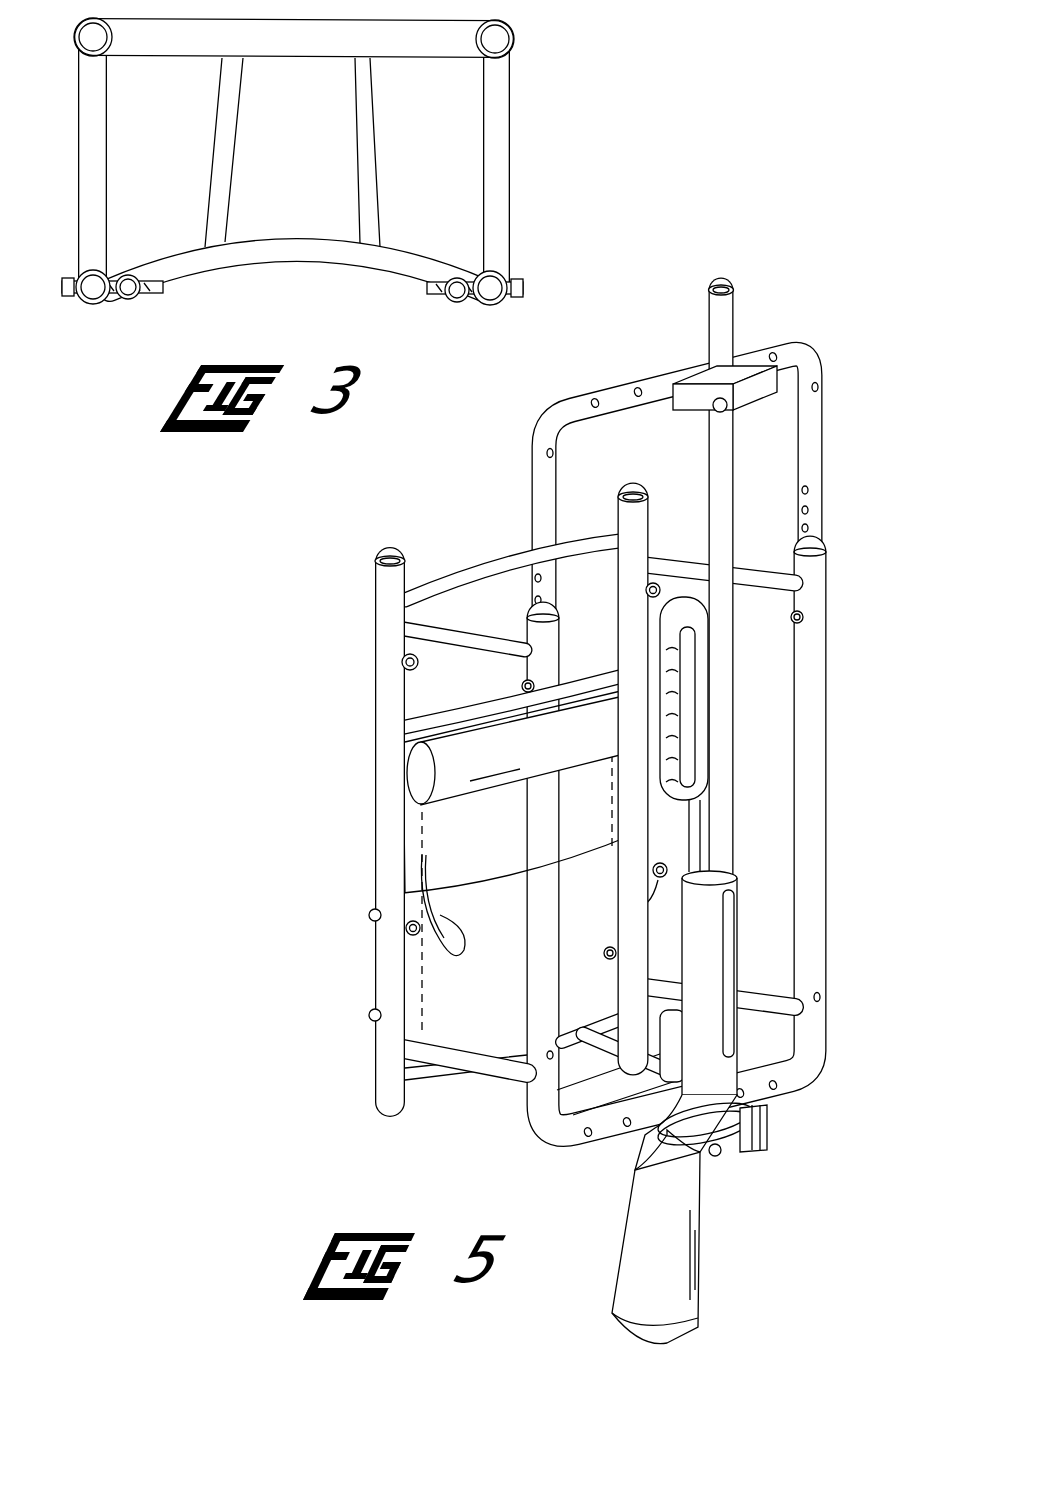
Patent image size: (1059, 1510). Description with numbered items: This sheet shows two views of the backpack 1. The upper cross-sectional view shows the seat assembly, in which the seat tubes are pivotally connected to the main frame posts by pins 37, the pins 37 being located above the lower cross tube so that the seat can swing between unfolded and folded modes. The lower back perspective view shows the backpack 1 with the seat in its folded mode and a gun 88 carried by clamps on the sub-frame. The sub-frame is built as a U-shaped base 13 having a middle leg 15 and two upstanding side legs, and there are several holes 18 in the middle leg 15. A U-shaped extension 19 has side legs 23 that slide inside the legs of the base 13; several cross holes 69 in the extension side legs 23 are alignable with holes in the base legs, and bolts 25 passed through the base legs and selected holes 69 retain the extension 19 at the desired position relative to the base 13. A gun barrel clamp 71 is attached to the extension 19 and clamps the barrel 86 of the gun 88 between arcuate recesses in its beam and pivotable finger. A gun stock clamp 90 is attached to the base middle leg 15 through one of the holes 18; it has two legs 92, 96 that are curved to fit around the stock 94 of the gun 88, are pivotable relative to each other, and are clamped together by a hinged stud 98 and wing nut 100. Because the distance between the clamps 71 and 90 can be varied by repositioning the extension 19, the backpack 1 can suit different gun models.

In FIG. 5, the backpack 1 is at (325, 663).
In FIG. 5, the U-shaped base 13 is at (838, 653).
In FIG. 5, the middle leg 15 is at (617, 1132).
In FIG. 5, the holes 18 is at (553, 1142).
In FIG. 5, the U-shaped extension 19 is at (835, 424).
In FIG. 5, the side legs 23 is at (540, 473).
In FIG. 5, the bolts 25 is at (522, 686).
In FIG. 3, the pins 37 is at (103, 307).
In FIG. 5, the cross holes 69 is at (537, 553).
In FIG. 5, the gun barrel clamp 71 is at (688, 415).
In FIG. 5, the barrel 86 is at (727, 310).
In FIG. 5, the gun 88 is at (748, 895).
In FIG. 5, the gun stock clamp 90 is at (748, 1165).
In FIG. 5, the leg 92 is at (643, 1213).
In FIG. 5, the stock 94 is at (642, 1290).
In FIG. 5, the leg 96 is at (742, 1108).
In FIG. 5, the hinged stud 98 is at (715, 1157).
In FIG. 5, the wing nut 100 is at (770, 1140).